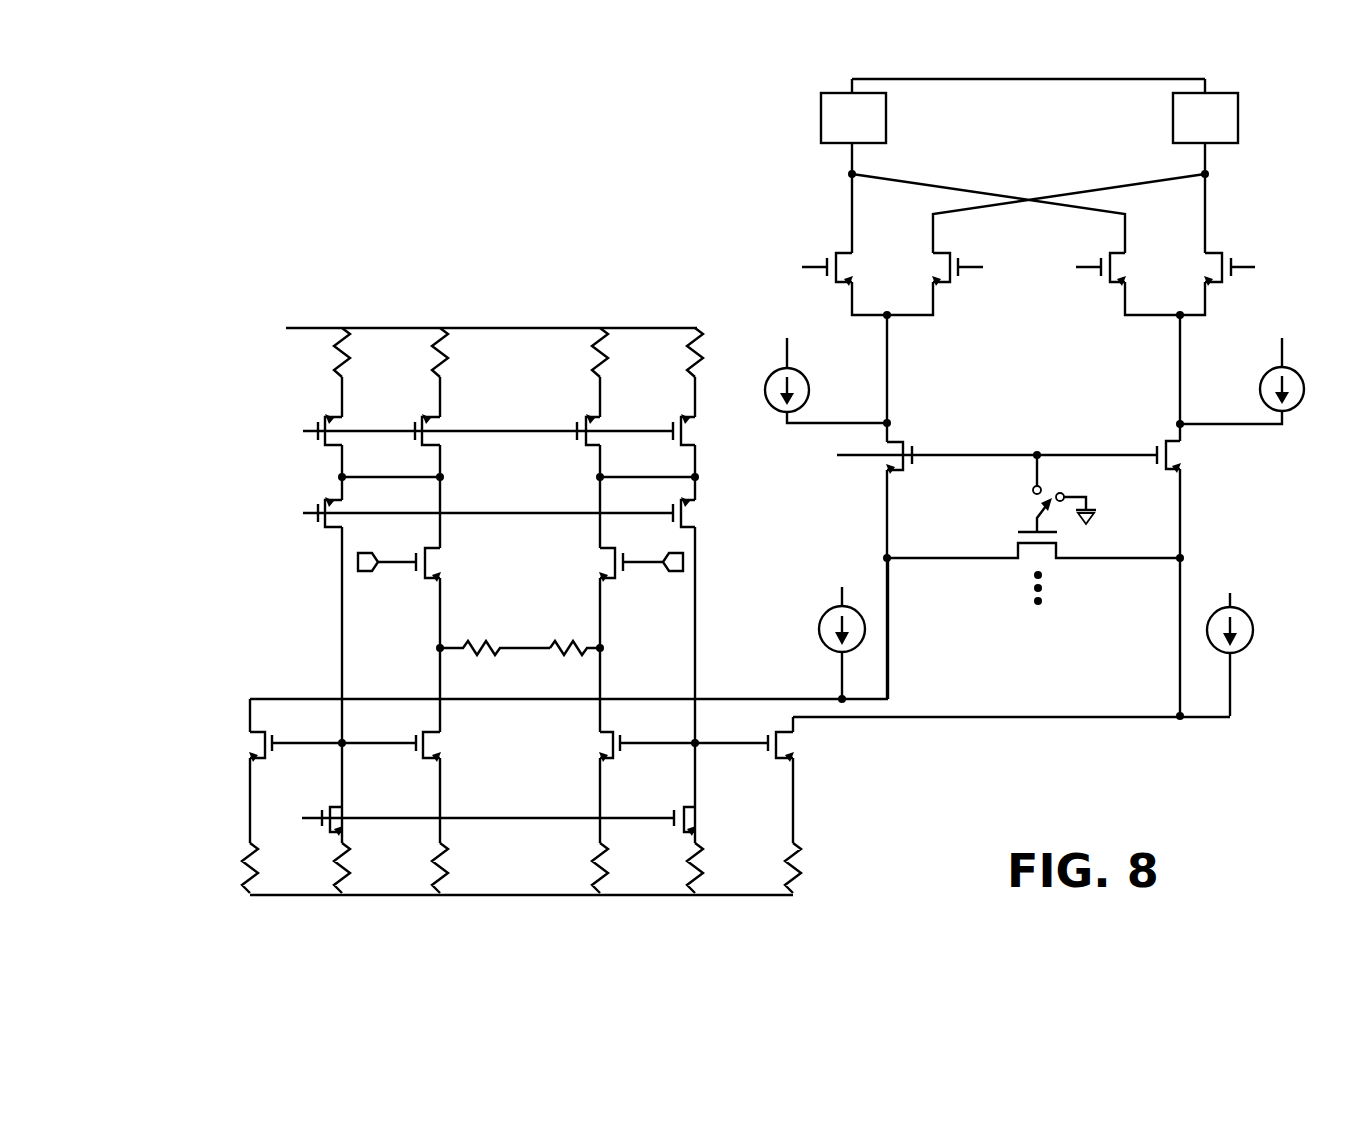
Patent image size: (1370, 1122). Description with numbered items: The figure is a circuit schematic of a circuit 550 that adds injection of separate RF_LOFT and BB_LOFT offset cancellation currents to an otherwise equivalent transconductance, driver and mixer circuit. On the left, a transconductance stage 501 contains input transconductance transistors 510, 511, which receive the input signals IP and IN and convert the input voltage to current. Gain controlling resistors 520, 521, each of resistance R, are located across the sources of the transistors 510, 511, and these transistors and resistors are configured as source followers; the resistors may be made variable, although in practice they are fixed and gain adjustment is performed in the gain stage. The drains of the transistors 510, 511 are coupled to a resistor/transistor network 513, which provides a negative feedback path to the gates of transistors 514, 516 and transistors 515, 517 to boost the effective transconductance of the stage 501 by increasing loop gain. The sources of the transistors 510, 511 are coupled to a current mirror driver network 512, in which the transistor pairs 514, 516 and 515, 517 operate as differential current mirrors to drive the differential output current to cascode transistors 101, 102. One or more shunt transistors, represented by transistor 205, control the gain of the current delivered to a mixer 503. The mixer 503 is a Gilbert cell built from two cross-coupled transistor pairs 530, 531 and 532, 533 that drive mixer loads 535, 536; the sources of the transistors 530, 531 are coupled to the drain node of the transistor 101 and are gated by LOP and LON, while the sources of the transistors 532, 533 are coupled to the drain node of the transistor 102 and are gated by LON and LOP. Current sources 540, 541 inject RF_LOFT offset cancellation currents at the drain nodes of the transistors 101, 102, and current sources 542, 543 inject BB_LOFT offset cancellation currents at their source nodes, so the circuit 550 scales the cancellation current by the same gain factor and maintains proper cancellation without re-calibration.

The circuit 550 is at (582, 174).
The transconductance stage 501 is at (493, 308).
The resistor/transistor network 513 is at (303, 458).
The input transconductance transistor 510 is at (443, 559).
The input transconductance transistor 511 is at (592, 558).
The gain controlling resistor 520 is at (490, 657).
The gain controlling resistor 521 is at (578, 658).
The transistor 516 is at (249, 740).
The transistor 514 is at (445, 746).
The transistor 515 is at (596, 740).
The transistor 517 is at (795, 742).
The current mirror driver network 512 is at (242, 812).
The mixer 503 is at (1262, 178).
The mixer load 535 is at (890, 122).
The mixer load 536 is at (1172, 118).
The transistor 530 is at (850, 251).
The transistor 531 is at (940, 287).
The transistor 532 is at (1115, 283).
The transistor 533 is at (1210, 251).
The current source 540 is at (767, 381).
The current source 541 is at (1303, 378).
The current source 542 is at (820, 622).
The current source 543 is at (1250, 618).
The cascode transistor 101 is at (905, 432).
The cascode transistor 102 is at (1164, 430).
The shunt transistor 205 is at (1050, 567).